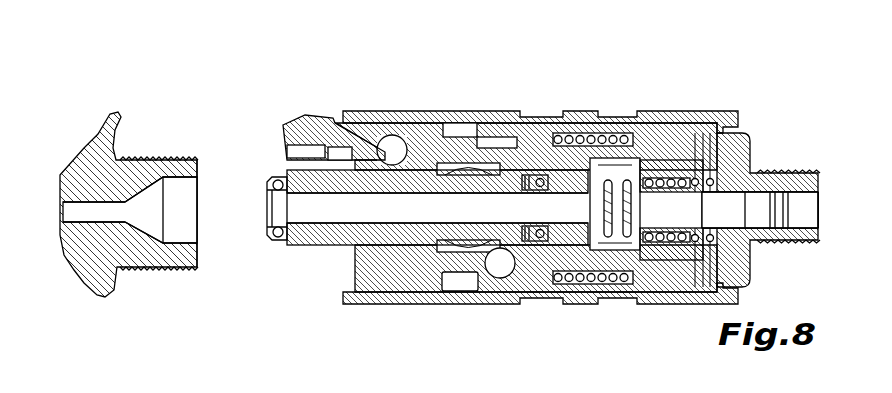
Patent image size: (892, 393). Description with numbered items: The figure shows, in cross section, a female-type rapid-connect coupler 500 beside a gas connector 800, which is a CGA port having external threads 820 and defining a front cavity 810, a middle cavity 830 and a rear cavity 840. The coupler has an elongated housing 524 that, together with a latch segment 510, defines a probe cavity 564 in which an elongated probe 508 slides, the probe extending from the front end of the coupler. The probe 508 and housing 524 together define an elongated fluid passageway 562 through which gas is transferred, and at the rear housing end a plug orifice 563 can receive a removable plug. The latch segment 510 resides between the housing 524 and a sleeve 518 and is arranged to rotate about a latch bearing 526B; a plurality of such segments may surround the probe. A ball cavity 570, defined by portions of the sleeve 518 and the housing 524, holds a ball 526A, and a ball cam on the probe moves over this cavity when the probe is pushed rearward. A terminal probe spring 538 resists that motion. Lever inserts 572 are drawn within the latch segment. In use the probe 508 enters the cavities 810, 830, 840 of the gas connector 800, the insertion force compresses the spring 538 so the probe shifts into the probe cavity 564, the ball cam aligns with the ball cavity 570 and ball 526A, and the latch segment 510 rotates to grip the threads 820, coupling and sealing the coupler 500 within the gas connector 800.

The rapid-connect coupler 500 is at (704, 68).
The probe 508 is at (314, 249).
The latch segment 510 is at (307, 118).
The sleeve 518 is at (647, 110).
The housing 524 is at (657, 300).
The ball 526A is at (500, 280).
The latch bearing 526B is at (393, 118).
The terminal probe spring 538 is at (593, 199).
The fluid passageway 562 is at (403, 203).
The plug orifice 563 is at (691, 201).
The probe cavity 564 is at (339, 256).
The ball cavity 570 is at (481, 281).
The lever insert 572 is at (279, 157).
The gas connector 800 is at (181, 110).
The front cavity 810 is at (206, 236).
The threads 820 is at (167, 152).
The middle cavity 830 is at (152, 201).
The rear cavity 840 is at (69, 210).